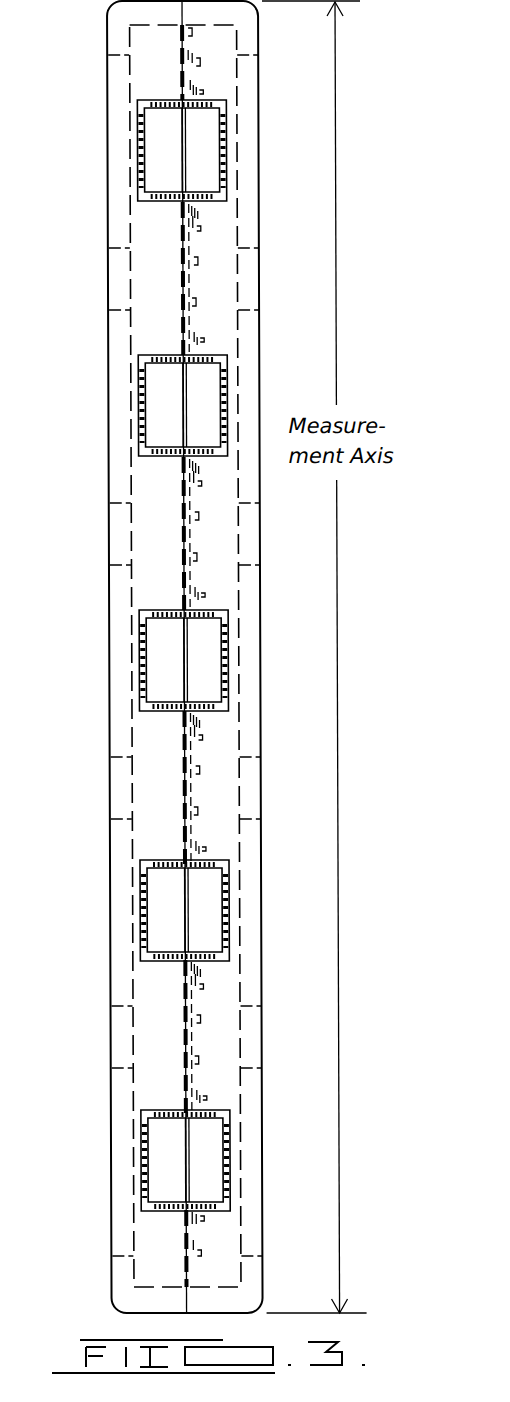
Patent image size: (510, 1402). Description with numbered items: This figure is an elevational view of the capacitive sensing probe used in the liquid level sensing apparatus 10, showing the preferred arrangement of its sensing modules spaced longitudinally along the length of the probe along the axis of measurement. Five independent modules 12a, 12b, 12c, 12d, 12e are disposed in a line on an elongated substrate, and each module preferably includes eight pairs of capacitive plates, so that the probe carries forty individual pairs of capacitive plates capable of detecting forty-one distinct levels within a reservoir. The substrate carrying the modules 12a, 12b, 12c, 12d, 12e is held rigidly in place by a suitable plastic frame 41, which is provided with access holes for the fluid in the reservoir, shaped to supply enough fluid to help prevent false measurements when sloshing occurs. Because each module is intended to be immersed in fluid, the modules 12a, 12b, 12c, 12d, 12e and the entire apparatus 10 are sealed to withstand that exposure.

The liquid level sensing apparatus 10 is at (82, 78).
The plastic frame 41 is at (115, 578).
The module 12a is at (138, 153).
The module 12b is at (137, 393).
The module 12c is at (137, 676).
The module 12d is at (137, 910).
The module 12e is at (137, 1160).